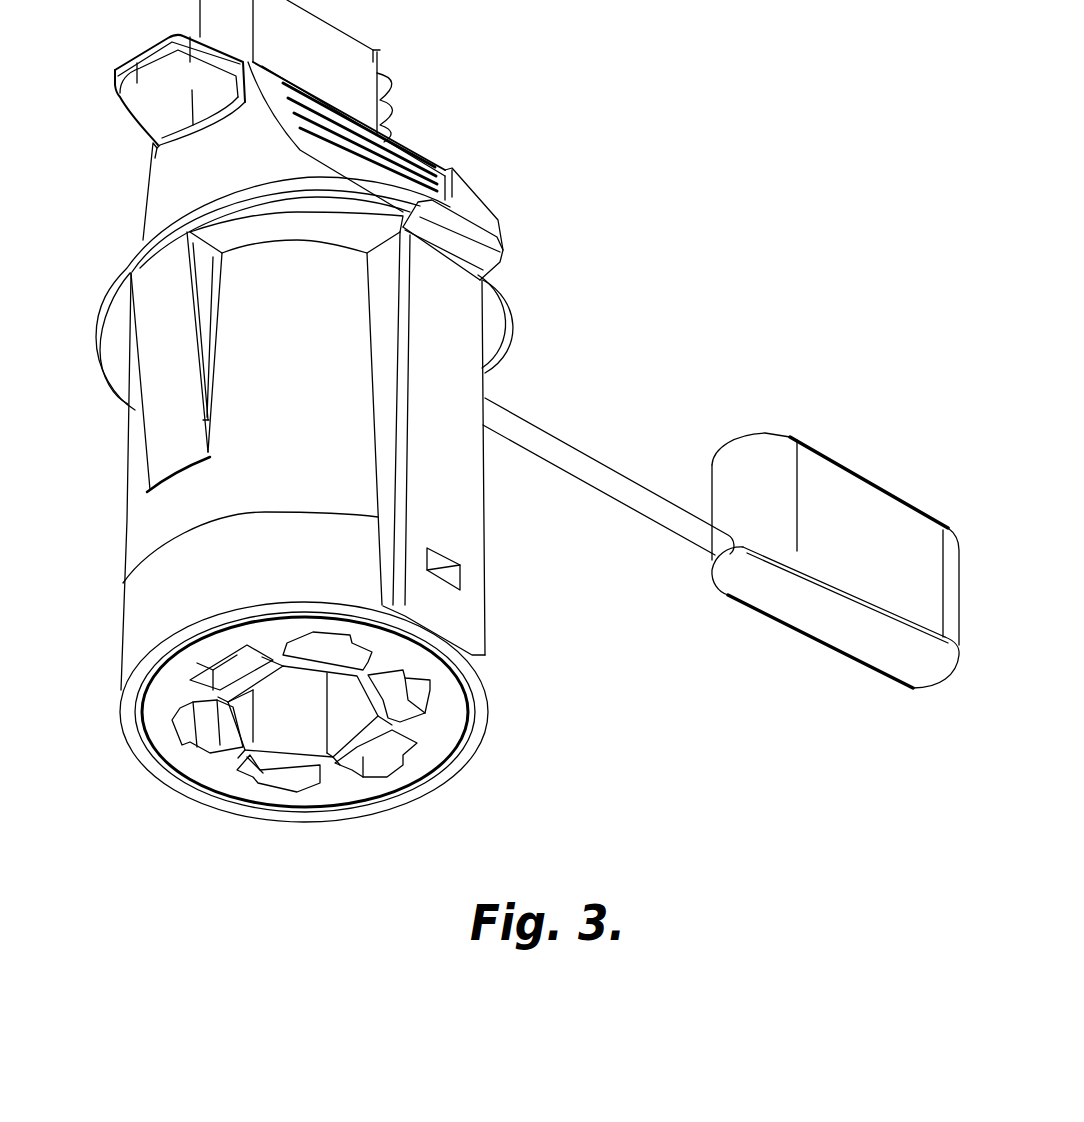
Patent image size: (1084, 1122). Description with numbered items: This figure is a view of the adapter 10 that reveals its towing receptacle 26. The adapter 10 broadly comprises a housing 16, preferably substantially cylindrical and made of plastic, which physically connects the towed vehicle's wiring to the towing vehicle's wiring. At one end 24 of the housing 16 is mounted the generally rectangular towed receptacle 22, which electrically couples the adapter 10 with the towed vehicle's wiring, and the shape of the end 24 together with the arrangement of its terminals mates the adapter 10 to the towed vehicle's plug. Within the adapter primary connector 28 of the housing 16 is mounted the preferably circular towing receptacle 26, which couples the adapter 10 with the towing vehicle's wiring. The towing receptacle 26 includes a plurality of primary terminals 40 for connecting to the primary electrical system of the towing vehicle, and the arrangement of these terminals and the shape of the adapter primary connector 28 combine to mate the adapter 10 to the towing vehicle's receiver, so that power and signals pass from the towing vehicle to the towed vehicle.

The adapter 10 is at (500, 447).
The housing 16 is at (130, 495).
The towed receptacle 22 is at (372, 50).
The end of the housing 24 is at (150, 178).
The towing receptacle 26 is at (437, 745).
The adapter primary connector 28 is at (486, 687).
The primary terminals 40 is at (220, 662).